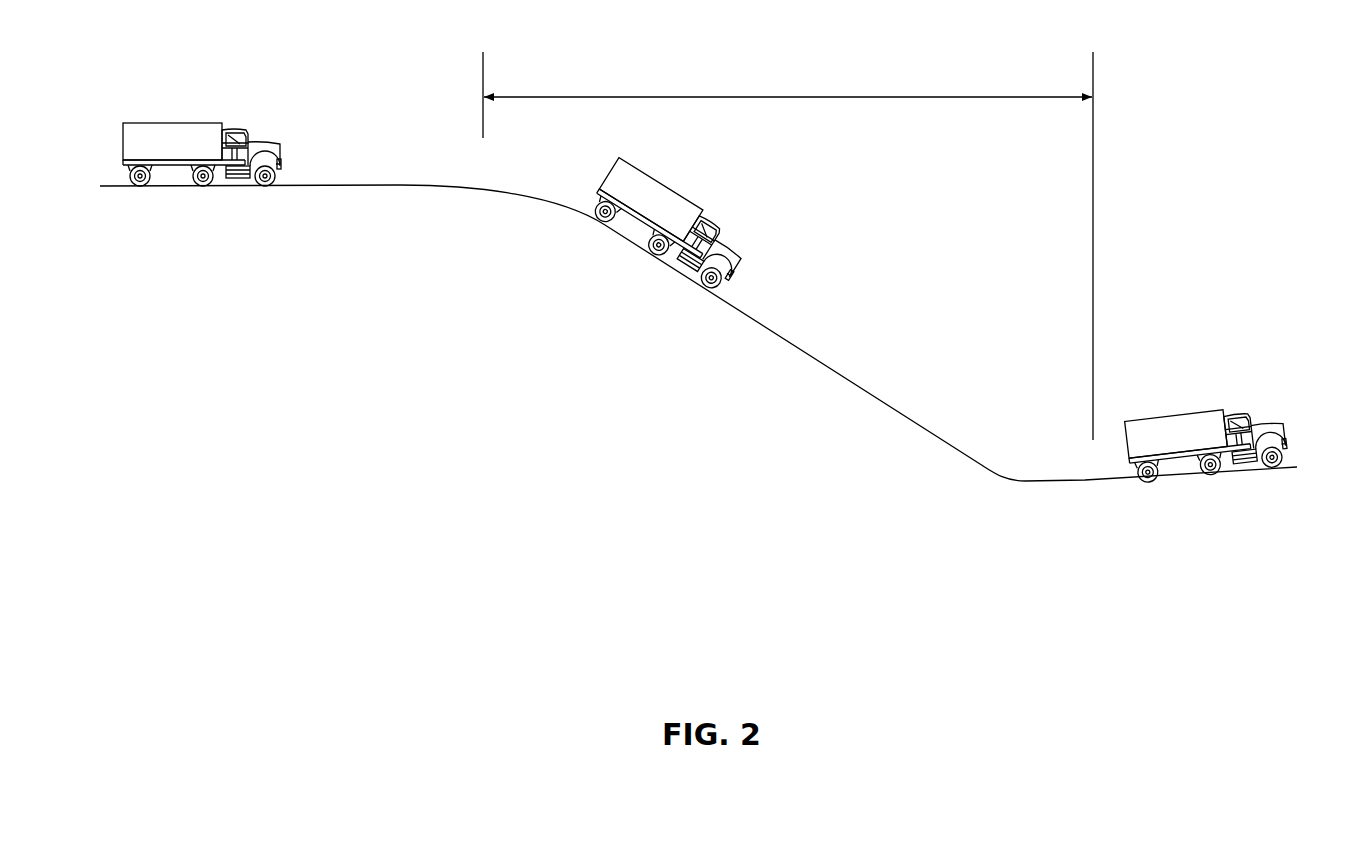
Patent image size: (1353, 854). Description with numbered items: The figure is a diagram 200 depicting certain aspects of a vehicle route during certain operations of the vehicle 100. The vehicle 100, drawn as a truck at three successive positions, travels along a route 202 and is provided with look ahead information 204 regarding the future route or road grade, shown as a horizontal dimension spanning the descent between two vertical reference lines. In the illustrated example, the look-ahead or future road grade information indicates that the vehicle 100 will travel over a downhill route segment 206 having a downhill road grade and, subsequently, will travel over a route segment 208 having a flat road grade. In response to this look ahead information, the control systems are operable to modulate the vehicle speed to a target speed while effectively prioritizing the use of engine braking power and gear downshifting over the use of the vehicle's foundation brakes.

The vehicle 100 is at (195, 121).
The diagram 200 is at (318, 405).
The route 202 is at (337, 180).
The look ahead information 204 is at (723, 96).
The downhill route segment 206 is at (735, 308).
The route segment 208 is at (1130, 481).